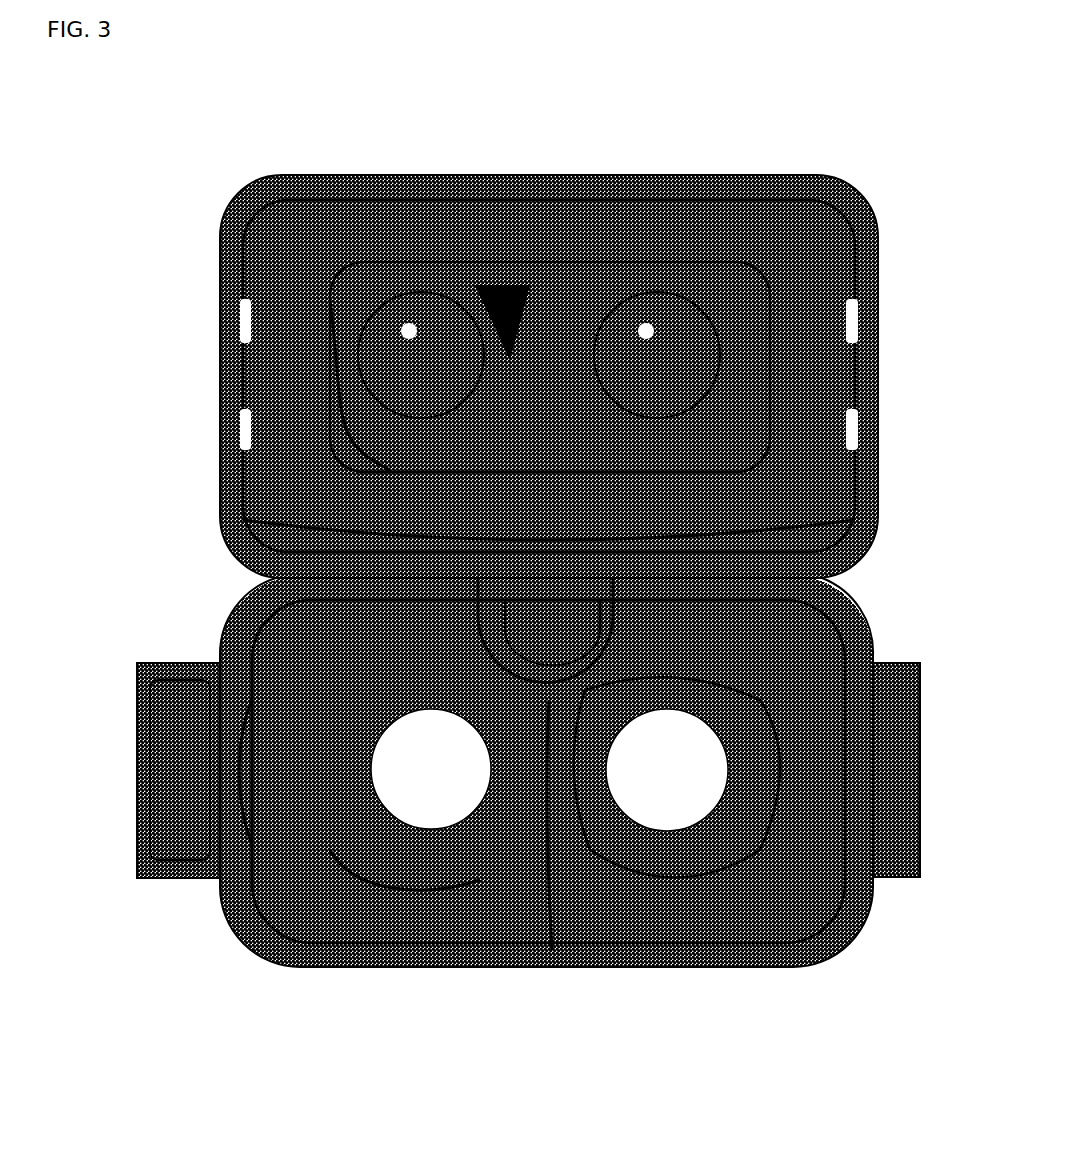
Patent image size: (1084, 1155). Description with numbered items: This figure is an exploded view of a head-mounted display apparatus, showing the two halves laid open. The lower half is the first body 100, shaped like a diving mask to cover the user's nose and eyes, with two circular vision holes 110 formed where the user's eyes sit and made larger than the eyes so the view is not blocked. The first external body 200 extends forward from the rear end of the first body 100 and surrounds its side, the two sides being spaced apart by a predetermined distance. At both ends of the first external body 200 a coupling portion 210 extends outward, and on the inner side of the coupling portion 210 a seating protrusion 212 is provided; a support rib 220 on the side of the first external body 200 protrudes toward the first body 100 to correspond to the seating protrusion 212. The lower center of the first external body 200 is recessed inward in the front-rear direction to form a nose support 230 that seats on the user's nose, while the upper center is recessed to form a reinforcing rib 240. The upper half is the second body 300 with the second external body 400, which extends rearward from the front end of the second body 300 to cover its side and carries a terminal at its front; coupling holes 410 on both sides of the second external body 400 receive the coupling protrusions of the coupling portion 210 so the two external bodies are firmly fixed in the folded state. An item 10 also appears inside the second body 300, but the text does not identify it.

The contact lens / ball 10 is at (421, 361).
The first body 100 is at (660, 855).
The vision holes 110 is at (720, 890).
The first external body 200 is at (388, 955).
The coupling portion 210 is at (157, 878).
The seating protrusion 212 is at (180, 706).
The support rib 220 is at (252, 840).
The nose support 230 is at (555, 950).
The reinforcing rib 240 is at (610, 620).
The second body 300 is at (453, 283).
The second external body 400 is at (709, 196).
The coupling holes 410 is at (245, 311).